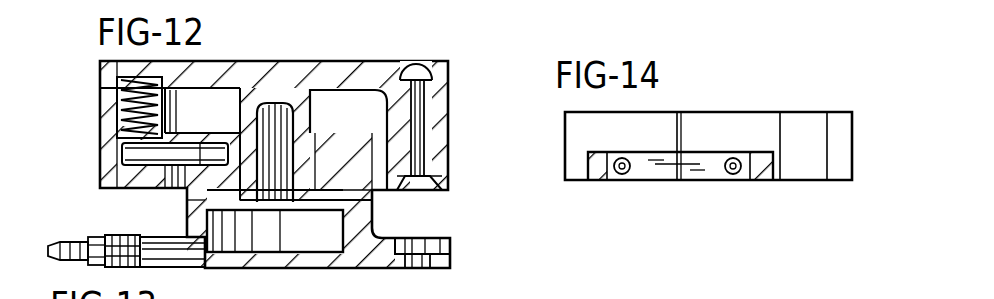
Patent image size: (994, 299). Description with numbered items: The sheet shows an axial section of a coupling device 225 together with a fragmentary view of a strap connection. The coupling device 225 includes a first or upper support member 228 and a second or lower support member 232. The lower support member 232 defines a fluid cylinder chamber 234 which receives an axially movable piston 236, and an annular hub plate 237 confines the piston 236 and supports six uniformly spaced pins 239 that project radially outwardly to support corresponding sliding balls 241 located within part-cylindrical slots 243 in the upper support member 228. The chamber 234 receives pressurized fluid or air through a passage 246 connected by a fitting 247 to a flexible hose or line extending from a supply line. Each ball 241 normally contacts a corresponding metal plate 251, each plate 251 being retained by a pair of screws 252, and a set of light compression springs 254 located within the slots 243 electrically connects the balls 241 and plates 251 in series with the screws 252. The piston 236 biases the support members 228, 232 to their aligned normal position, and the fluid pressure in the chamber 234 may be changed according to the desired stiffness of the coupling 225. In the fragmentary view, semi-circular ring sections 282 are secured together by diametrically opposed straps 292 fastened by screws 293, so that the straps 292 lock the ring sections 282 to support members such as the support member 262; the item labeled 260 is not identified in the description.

In FIG. 12, the coupling device 225 is at (372, 58).
In FIG. 12, the upper support member 228 is at (460, 68).
In FIG. 12, the lower support member 232 is at (458, 255).
In FIG. 12, the fluid cylinder chamber 234 is at (305, 240).
In FIG. 12, the piston 236 is at (251, 95).
In FIG. 12, the annular hub plate 237 is at (366, 128).
In FIG. 12, the pins 239 is at (187, 190).
In FIG. 12, the sliding balls 241 is at (185, 160).
In FIG. 12, the slots 243 is at (117, 91).
In FIG. 12, the passage 246 is at (202, 264).
In FIG. 12, the fitting 247 is at (68, 240).
In FIG. 12, the metal plate 251 is at (125, 190).
In FIG. 12, the screws 252 is at (422, 126).
In FIG. 12, the light compression springs 254 is at (117, 126).
In FIG. 12, the body 260 is at (470, 298).
In FIG. 12, the support member 262 is at (434, 286).
In FIG. 14, the semi-circular ring sections 282 is at (738, 120).
In FIG. 14, the straps 292 is at (700, 176).
In FIG. 14, the screws 293 is at (627, 178).